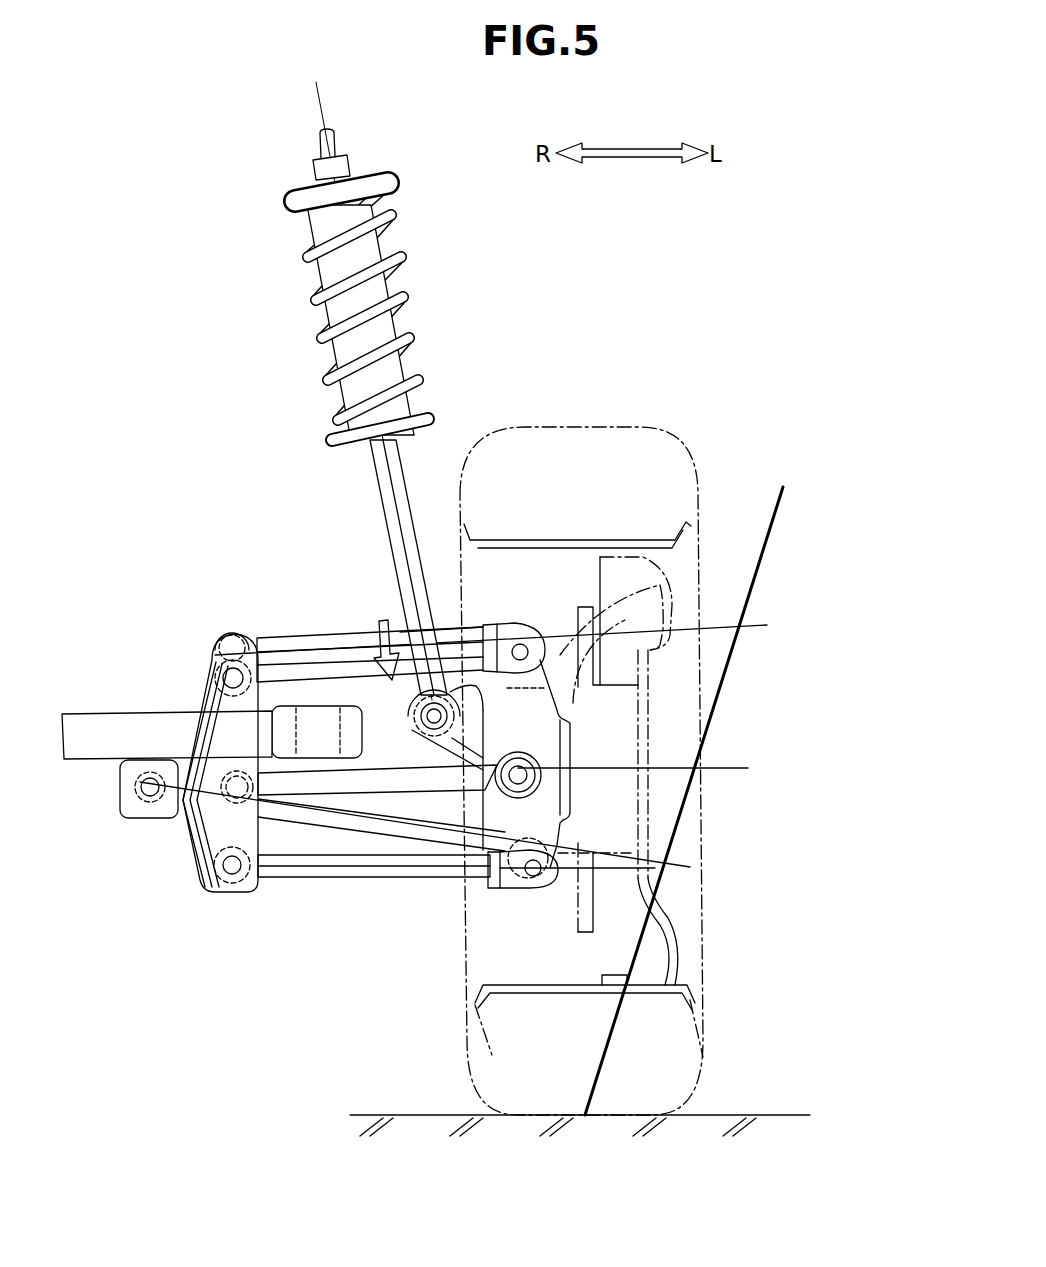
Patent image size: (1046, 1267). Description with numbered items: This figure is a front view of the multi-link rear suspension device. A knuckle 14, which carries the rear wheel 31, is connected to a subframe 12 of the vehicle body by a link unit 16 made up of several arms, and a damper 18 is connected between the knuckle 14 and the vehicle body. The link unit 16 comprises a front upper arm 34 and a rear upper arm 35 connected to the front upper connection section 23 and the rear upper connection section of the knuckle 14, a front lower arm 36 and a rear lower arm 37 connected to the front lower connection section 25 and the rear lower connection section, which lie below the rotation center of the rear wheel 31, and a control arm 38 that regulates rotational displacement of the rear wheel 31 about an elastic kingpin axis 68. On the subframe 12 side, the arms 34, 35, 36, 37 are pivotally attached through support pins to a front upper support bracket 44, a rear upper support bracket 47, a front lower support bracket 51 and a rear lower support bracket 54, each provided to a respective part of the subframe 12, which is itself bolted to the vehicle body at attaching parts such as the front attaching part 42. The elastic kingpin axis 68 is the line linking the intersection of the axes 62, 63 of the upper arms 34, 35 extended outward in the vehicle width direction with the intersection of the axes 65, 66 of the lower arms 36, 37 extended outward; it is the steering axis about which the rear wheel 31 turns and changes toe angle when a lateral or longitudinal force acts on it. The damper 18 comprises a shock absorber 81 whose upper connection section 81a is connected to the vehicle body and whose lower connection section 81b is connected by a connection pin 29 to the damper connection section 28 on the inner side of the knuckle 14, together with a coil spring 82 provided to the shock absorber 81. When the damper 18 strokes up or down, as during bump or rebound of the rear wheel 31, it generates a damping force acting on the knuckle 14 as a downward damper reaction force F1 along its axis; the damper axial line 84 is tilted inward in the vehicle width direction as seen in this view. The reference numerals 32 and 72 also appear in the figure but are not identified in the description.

The subframe 12 is at (92, 713).
The knuckle 14 is at (560, 699).
The link unit 16 is at (153, 692).
The damper 18 is at (368, 407).
The front upper connection section 23 is at (580, 640).
The front lower connection section 25 is at (560, 862).
The damper connection section 28 is at (450, 745).
The connection pin 29 is at (424, 728).
The rear wheel 31 is at (600, 425).
The wheel axis 32 is at (607, 767).
The front upper arm 34 is at (290, 665).
The rear upper arm 35 is at (450, 635).
The front lower arm 36 is at (292, 880).
The rear lower arm 37 is at (360, 830).
The control arm 38 is at (400, 785).
The front attaching part 42 is at (313, 710).
The front upper support bracket 44 is at (193, 702).
The rear upper support bracket 47 is at (210, 648).
The front lower support bracket 51 is at (212, 825).
The rear lower support bracket 54 is at (128, 783).
The axis of front upper arm 62 is at (660, 585).
The axis of rear upper arm 63 is at (553, 700).
The axis of front lower arm 65 is at (320, 880).
The axis of rear lower arm 66 is at (323, 813).
The elastic kingpin axis 68 is at (683, 810).
The ground 72 is at (760, 1113).
The shock absorber 81 is at (370, 483).
The upper connection section 81a is at (350, 153).
The lower connection section 81b is at (462, 706).
The coil spring 82 is at (359, 308).
The damper axial line 84 is at (380, 380).
The damper reaction force F1 is at (378, 625).